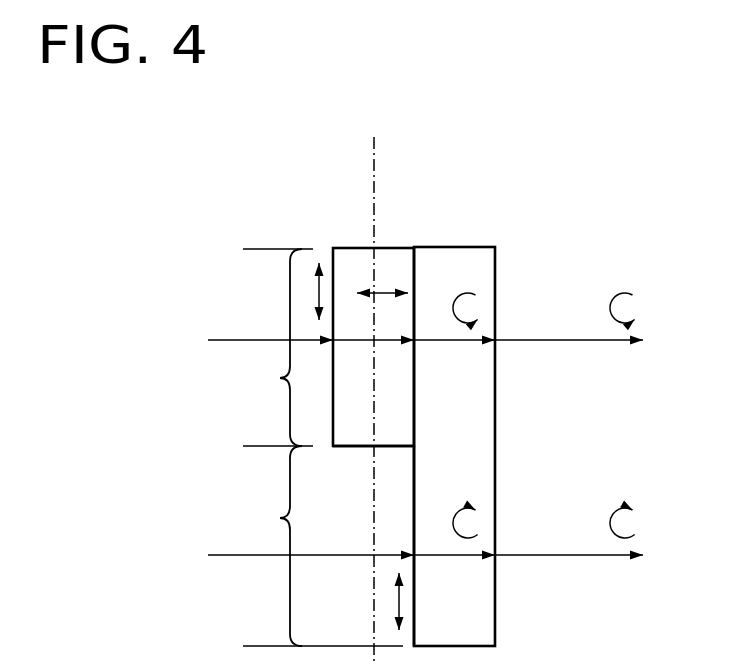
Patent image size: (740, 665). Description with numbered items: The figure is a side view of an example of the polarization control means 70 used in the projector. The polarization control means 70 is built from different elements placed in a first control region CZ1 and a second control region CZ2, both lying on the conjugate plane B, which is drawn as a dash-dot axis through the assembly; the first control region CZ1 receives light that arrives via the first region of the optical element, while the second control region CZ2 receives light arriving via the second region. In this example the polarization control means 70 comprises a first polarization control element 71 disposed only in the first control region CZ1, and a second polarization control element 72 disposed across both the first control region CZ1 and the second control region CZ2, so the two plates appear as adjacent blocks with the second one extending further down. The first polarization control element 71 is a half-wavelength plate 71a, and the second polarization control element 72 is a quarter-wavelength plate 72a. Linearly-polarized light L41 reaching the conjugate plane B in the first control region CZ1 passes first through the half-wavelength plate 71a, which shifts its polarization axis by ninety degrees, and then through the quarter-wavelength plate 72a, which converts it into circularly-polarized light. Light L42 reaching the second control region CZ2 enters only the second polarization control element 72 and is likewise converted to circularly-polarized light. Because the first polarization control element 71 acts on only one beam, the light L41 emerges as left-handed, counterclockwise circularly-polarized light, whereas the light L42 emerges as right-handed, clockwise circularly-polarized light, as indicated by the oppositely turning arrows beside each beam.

The polarization control means 70 is at (549, 170).
The first polarization control element 71 is at (352, 247).
The half-wavelength plate 71a is at (357, 434).
The second polarization control element 72 is at (455, 247).
The quarter-wavelength plate 72a is at (485, 419).
The conjugate plane B is at (376, 175).
The light L41 is at (564, 338).
The light L42 is at (564, 553).
The first control region CZ1 is at (273, 347).
The second control region CZ2 is at (318, 546).